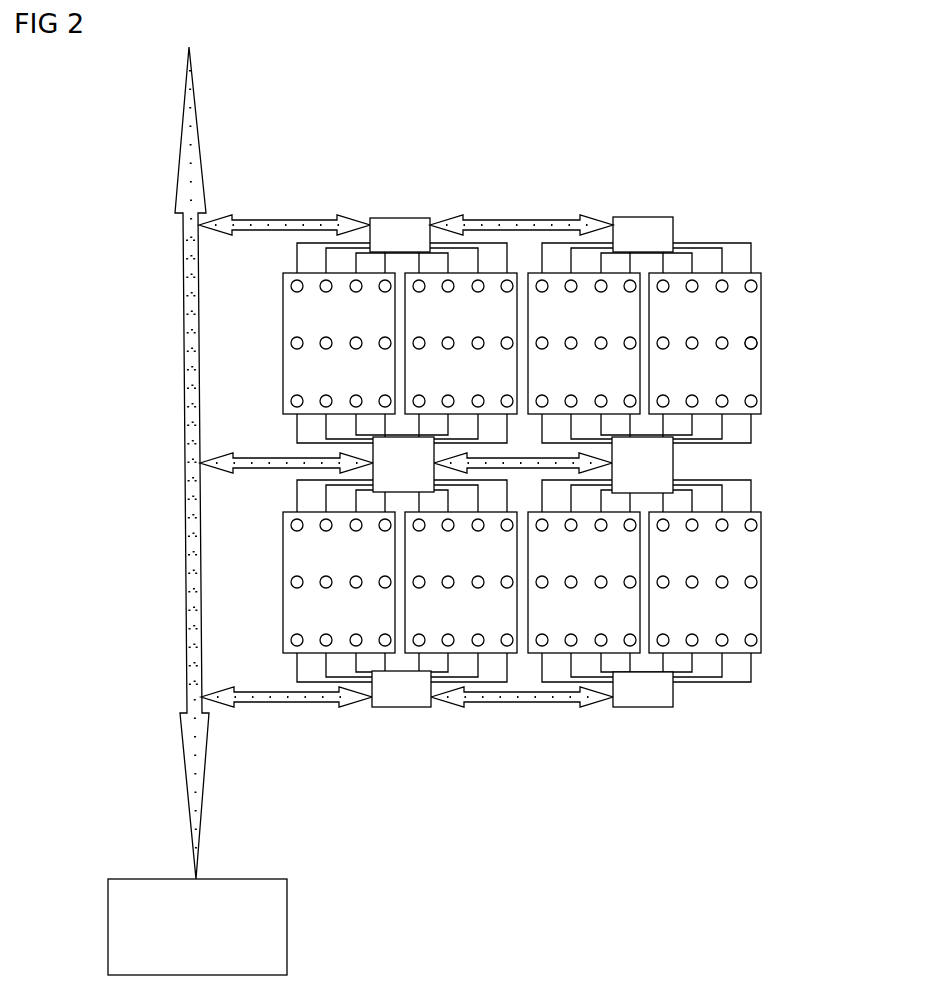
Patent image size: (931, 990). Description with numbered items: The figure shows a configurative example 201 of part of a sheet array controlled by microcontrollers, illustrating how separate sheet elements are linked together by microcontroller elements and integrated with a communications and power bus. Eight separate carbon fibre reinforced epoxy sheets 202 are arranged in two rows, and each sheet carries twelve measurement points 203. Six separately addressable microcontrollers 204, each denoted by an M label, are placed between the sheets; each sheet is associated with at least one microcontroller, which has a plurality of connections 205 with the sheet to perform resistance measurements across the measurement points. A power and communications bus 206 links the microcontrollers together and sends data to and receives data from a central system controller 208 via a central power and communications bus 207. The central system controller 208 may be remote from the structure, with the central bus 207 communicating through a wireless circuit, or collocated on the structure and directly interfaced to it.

The configurative example 201 is at (480, 417).
The carbon fibre reinforced epoxy sheet 202 is at (761, 302).
The measurement point 203 is at (755, 347).
The microcontroller 204 is at (673, 462).
The signal connection lines 205 is at (750, 432).
The power and communications bus 206 is at (526, 222).
The central power and communications bus 207 is at (185, 612).
The central system controller 208 is at (197, 927).